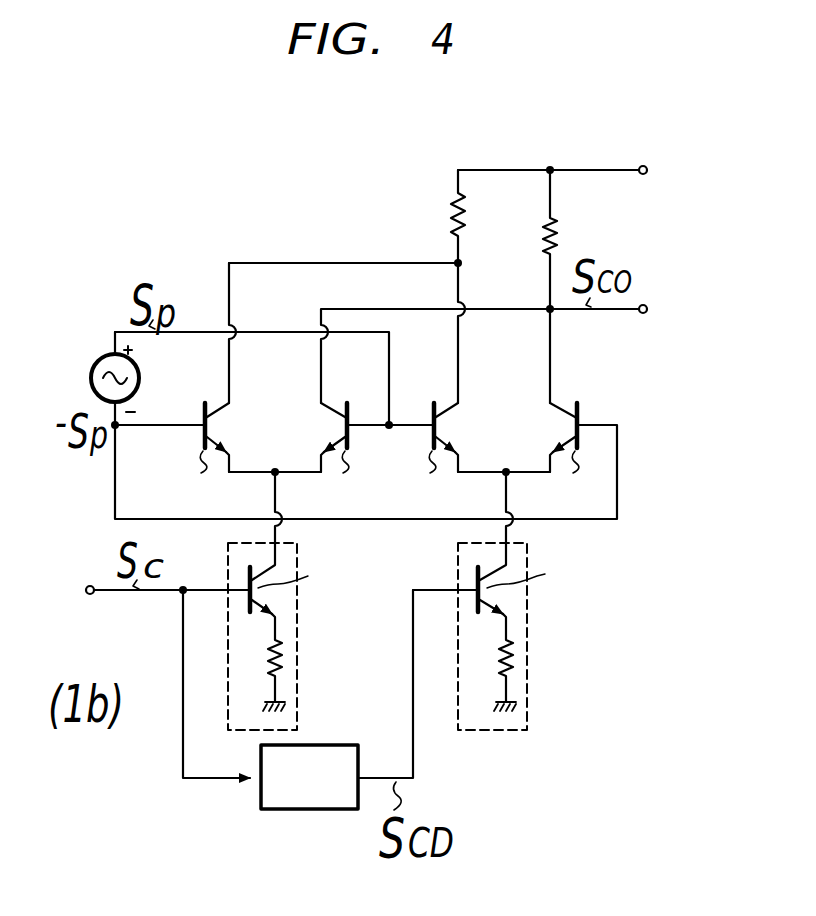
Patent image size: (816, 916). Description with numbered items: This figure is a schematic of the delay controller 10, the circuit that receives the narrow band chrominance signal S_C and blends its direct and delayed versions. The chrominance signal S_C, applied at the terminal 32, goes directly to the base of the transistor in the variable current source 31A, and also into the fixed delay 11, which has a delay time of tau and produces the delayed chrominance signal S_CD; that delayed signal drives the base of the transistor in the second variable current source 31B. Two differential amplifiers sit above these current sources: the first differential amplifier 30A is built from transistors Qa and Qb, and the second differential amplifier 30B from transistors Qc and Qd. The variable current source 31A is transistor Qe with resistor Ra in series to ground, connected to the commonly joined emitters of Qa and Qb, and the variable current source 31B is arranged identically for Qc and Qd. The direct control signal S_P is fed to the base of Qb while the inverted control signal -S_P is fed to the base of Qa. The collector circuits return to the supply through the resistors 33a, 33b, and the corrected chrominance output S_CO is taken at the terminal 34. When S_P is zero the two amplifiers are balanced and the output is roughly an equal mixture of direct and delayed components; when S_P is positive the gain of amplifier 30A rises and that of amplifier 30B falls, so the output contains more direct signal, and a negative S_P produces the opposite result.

The delay controller 10 is at (279, 222).
The fixed delay 11 is at (326, 812).
The first differential amplifier 30A is at (312, 398).
The second differential amplifier 30B is at (546, 388).
The variable current source 31A is at (297, 626).
The variable current source 31B is at (527, 626).
The input terminal for chrominance signal Sc 32 is at (92, 596).
The load resistor 33a is at (454, 220).
The load resistor 33b is at (552, 228).
The output terminal 34 is at (645, 315).